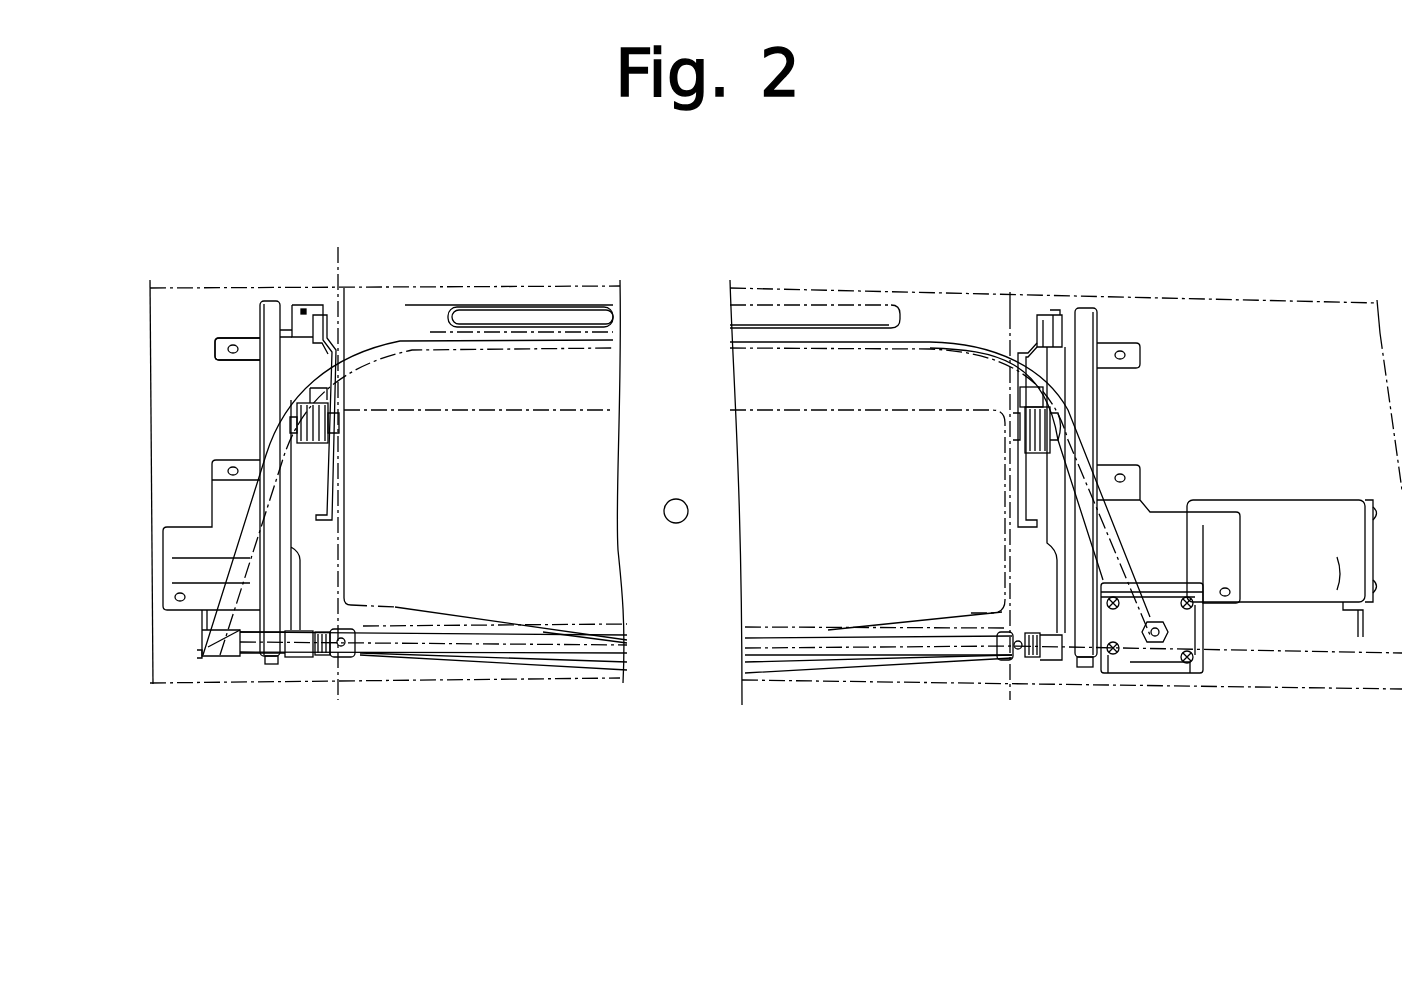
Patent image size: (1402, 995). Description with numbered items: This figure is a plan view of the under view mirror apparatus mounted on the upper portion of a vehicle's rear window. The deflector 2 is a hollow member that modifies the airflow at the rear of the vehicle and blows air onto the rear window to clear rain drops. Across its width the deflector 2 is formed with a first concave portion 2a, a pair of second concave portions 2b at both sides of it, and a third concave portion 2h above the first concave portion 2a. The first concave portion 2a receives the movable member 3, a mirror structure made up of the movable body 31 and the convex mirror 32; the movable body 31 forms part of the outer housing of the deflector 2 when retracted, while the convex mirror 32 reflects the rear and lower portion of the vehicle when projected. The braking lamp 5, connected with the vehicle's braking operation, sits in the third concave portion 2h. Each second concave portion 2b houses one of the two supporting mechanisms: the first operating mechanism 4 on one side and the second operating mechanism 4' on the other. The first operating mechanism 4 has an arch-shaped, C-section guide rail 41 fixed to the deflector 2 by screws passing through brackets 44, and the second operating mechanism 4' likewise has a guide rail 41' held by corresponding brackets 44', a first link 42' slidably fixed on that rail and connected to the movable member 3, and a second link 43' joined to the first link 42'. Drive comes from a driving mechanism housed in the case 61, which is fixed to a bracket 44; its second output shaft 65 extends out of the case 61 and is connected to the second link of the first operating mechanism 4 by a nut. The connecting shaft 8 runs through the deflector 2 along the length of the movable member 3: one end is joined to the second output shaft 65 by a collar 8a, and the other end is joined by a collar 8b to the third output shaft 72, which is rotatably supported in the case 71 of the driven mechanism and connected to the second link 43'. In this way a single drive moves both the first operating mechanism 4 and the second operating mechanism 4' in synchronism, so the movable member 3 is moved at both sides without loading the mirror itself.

The deflector 2 is at (1138, 300).
The first concave portion 2a is at (430, 345).
The second concave portions 2b is at (340, 290).
The third concave portion 2h is at (522, 312).
The movable member 3 is at (943, 345).
The first operating mechanism 4 is at (1245, 433).
The second operating mechanism 4' is at (211, 273).
The braking lamp 5 is at (790, 315).
The connecting shaft 8 is at (847, 652).
The collar 8a is at (1006, 658).
The collar 8b is at (348, 657).
The movable body 31 is at (569, 358).
The convex mirror 32 is at (900, 602).
The guide rail 41 is at (1098, 438).
The guide rail 41' is at (279, 426).
The first link 42' is at (349, 364).
The second link 43' is at (332, 584).
The brackets 44 is at (1201, 492).
The mounting bracket 44' is at (156, 391).
The case 61 is at (1173, 636).
The second output shaft 65 is at (1078, 658).
The case 71 is at (220, 653).
The third output shaft 72 is at (284, 658).